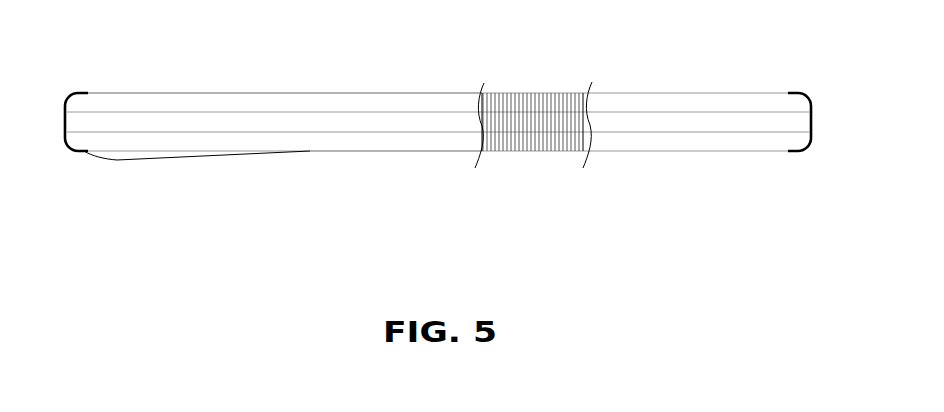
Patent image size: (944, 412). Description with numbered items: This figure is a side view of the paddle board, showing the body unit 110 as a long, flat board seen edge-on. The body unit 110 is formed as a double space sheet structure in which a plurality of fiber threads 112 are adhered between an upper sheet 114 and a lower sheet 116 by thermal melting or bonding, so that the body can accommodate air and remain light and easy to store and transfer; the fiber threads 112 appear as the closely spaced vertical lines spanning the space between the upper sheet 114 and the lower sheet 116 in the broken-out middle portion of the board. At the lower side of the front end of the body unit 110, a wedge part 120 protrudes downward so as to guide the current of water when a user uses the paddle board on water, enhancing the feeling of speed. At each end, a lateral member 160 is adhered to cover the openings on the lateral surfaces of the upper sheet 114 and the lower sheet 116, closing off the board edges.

The body unit 110 is at (678, 100).
The fiber threads 112 is at (528, 100).
The upper sheet 114 is at (373, 92).
The lower sheet 116 is at (378, 153).
The wedge part 120 is at (117, 162).
The lateral member 160 is at (72, 92).